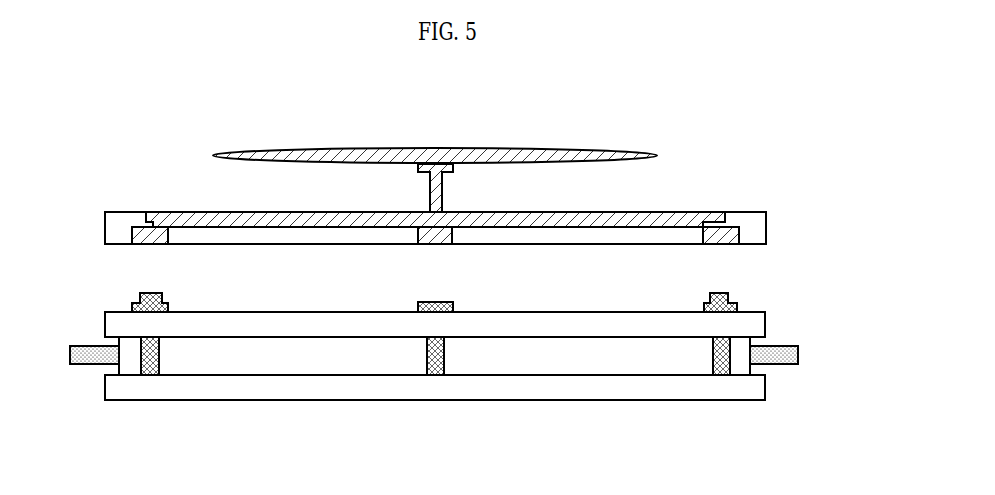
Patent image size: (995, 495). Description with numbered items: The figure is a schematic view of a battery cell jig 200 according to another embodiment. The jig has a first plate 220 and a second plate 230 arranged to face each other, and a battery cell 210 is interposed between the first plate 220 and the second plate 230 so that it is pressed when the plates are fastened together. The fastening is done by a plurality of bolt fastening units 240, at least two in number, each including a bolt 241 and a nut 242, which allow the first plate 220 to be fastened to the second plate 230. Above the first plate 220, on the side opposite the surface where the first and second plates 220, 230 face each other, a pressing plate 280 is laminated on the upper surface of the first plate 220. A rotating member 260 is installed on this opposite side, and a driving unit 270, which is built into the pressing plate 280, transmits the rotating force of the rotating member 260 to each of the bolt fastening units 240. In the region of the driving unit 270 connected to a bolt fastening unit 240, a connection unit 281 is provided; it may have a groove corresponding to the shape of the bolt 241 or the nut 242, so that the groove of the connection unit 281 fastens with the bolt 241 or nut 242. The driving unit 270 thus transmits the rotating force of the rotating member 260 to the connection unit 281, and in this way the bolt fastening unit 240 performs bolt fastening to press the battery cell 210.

The battery cell jig 200 is at (127, 108).
The battery cell 210 is at (740, 367).
The first plate 220 is at (765, 325).
The second plate 230 is at (765, 385).
The bolt fastening unit 240 is at (376, 364).
The bolt 241 is at (141, 367).
The nut 242 is at (140, 300).
The rotating member 260 is at (632, 149).
The driving unit 270 is at (163, 212).
The pressing plate 280 is at (755, 228).
The connection unit 281 is at (721, 241).